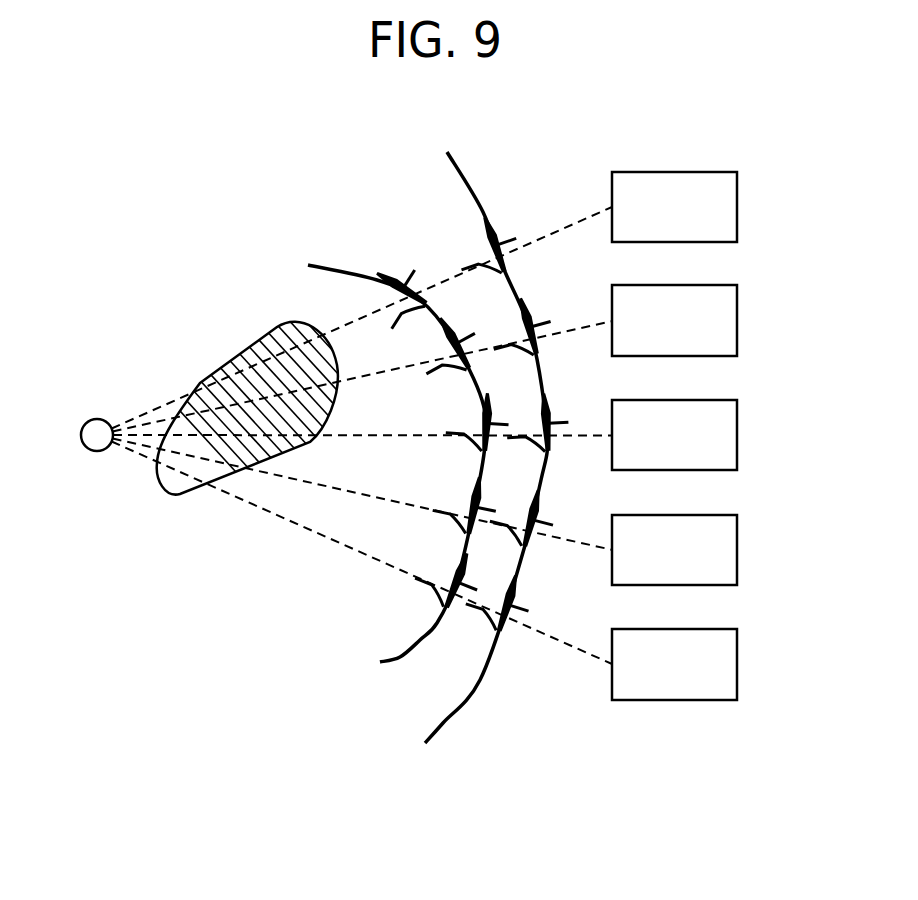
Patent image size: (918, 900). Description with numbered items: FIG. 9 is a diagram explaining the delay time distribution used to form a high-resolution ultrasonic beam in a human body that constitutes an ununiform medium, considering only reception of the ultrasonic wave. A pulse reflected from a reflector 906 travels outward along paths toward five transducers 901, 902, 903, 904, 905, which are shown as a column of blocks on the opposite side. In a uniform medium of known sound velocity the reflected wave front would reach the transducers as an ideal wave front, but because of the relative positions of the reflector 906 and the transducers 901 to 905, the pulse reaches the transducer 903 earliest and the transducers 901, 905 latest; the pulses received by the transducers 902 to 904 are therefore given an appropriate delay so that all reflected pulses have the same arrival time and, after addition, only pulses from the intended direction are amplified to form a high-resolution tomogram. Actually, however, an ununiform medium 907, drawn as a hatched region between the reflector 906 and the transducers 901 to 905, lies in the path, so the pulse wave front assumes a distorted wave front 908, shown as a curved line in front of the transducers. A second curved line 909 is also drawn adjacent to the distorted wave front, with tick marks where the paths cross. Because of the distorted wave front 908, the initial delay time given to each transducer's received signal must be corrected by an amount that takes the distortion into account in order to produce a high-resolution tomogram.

The transducer 901 is at (739, 207).
The transducer 902 is at (739, 321).
The transducer 903 is at (739, 435).
The transducer 904 is at (739, 550).
The transducer 905 is at (739, 664).
The reflector 906 is at (84, 449).
The ununiform medium 907 is at (175, 494).
The distorted wave front 908 is at (323, 266).
The outer arc of detector elements 909 is at (455, 155).